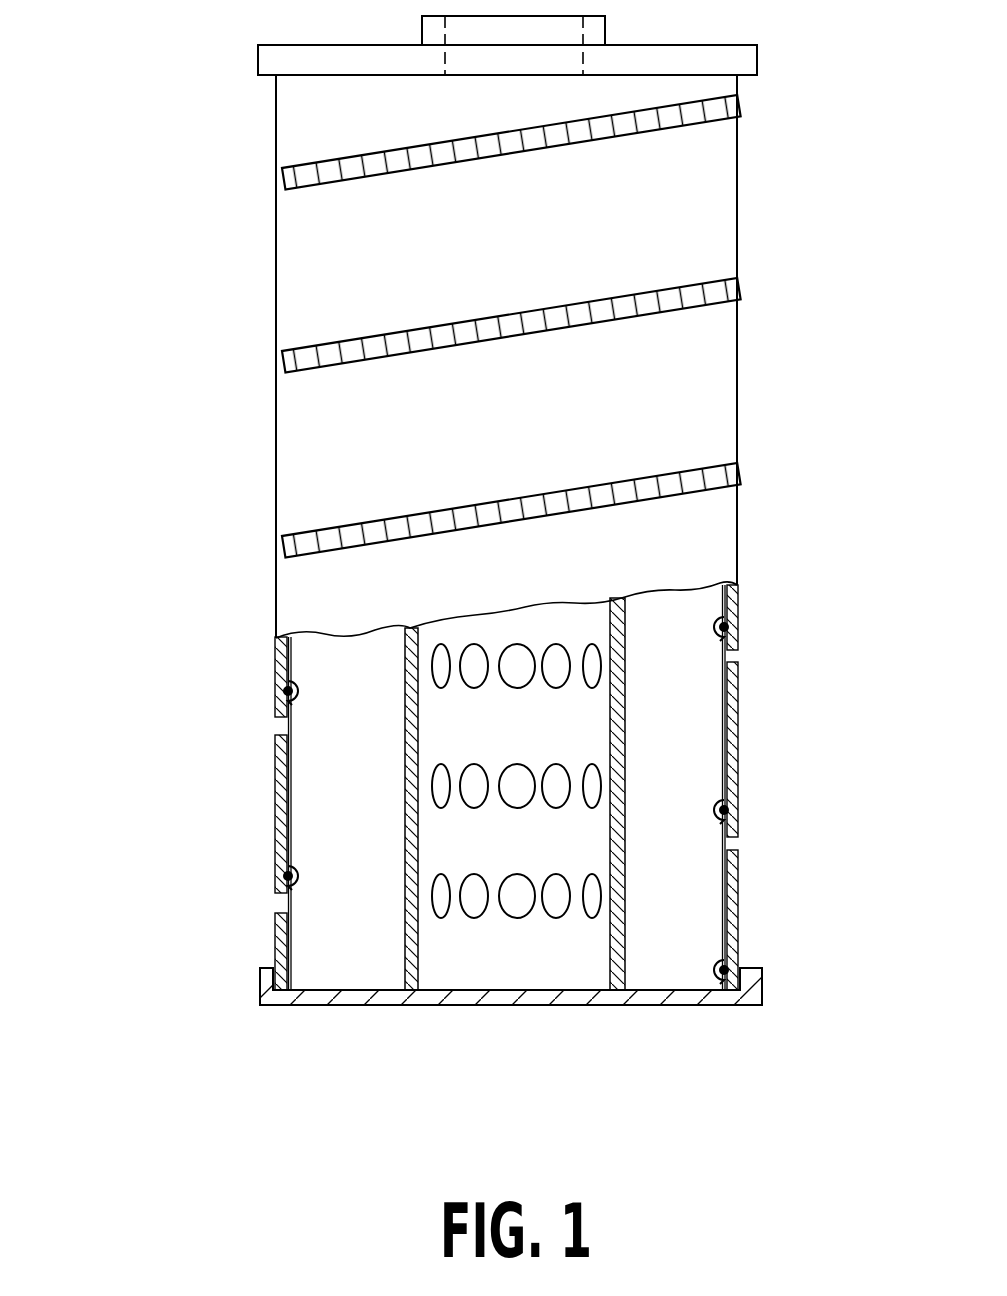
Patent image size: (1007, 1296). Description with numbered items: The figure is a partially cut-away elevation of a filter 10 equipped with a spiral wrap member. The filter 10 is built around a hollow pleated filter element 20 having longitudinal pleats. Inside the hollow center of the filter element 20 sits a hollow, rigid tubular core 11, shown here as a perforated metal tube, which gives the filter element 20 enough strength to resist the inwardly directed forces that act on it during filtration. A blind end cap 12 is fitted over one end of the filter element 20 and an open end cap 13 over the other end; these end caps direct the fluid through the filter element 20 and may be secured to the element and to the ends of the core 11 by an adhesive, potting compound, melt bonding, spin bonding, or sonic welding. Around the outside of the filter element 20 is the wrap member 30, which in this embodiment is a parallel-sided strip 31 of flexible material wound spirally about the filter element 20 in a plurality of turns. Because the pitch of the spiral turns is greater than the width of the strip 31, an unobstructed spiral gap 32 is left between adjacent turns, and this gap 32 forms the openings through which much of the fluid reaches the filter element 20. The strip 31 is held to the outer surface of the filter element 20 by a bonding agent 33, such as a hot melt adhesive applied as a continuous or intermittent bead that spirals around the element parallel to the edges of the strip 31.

The filter 10 is at (153, 682).
The tubular core 11 is at (467, 968).
The blind end cap 12 is at (746, 988).
The open end cap 13 is at (752, 45).
The filter element 20 is at (703, 772).
The wrap member 30 is at (737, 218).
The strip 31 is at (718, 363).
The spiral gap 32 is at (727, 471).
The bonding agent 33 is at (728, 627).